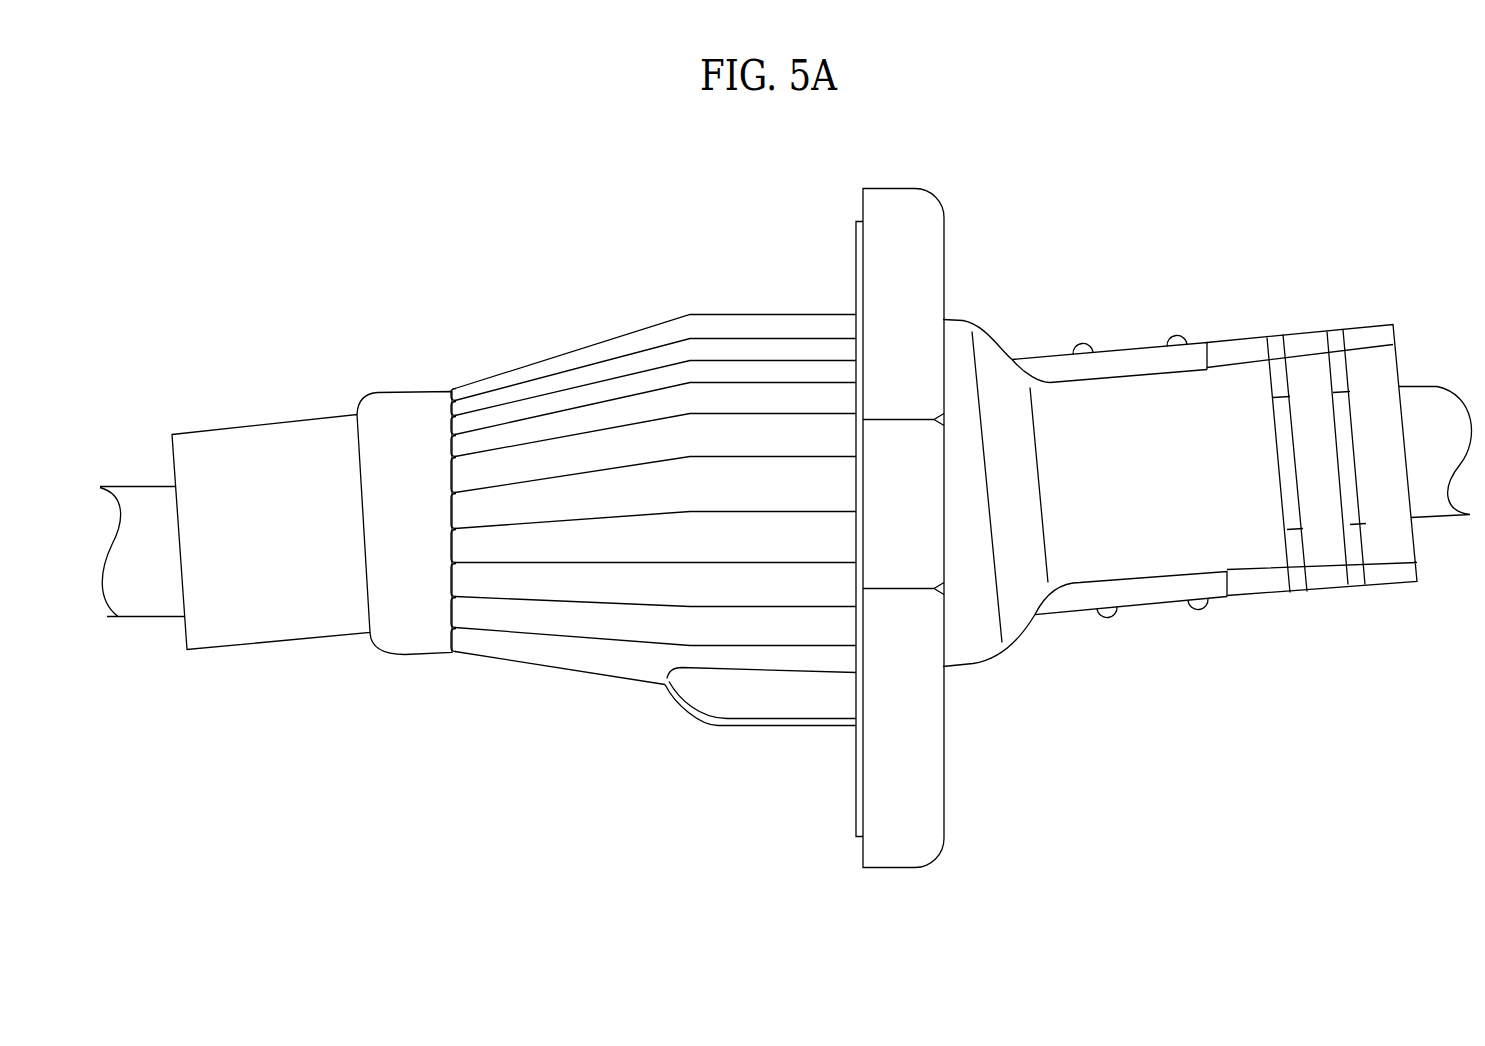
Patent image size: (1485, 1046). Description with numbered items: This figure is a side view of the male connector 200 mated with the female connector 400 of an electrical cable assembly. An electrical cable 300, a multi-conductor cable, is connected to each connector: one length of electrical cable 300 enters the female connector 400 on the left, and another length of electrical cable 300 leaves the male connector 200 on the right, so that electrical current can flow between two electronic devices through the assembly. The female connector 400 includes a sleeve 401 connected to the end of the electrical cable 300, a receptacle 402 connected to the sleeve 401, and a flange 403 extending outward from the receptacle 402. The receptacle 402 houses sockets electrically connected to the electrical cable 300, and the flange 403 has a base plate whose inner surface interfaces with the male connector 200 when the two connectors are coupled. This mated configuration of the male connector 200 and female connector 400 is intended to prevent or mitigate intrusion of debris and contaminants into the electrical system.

The male connector 200 is at (1182, 198).
The electrical cable 300 is at (142, 517).
The female connector 400 is at (567, 242).
The sleeve 401 is at (265, 445).
The receptacle 402 is at (597, 363).
The flange 403 is at (856, 250).